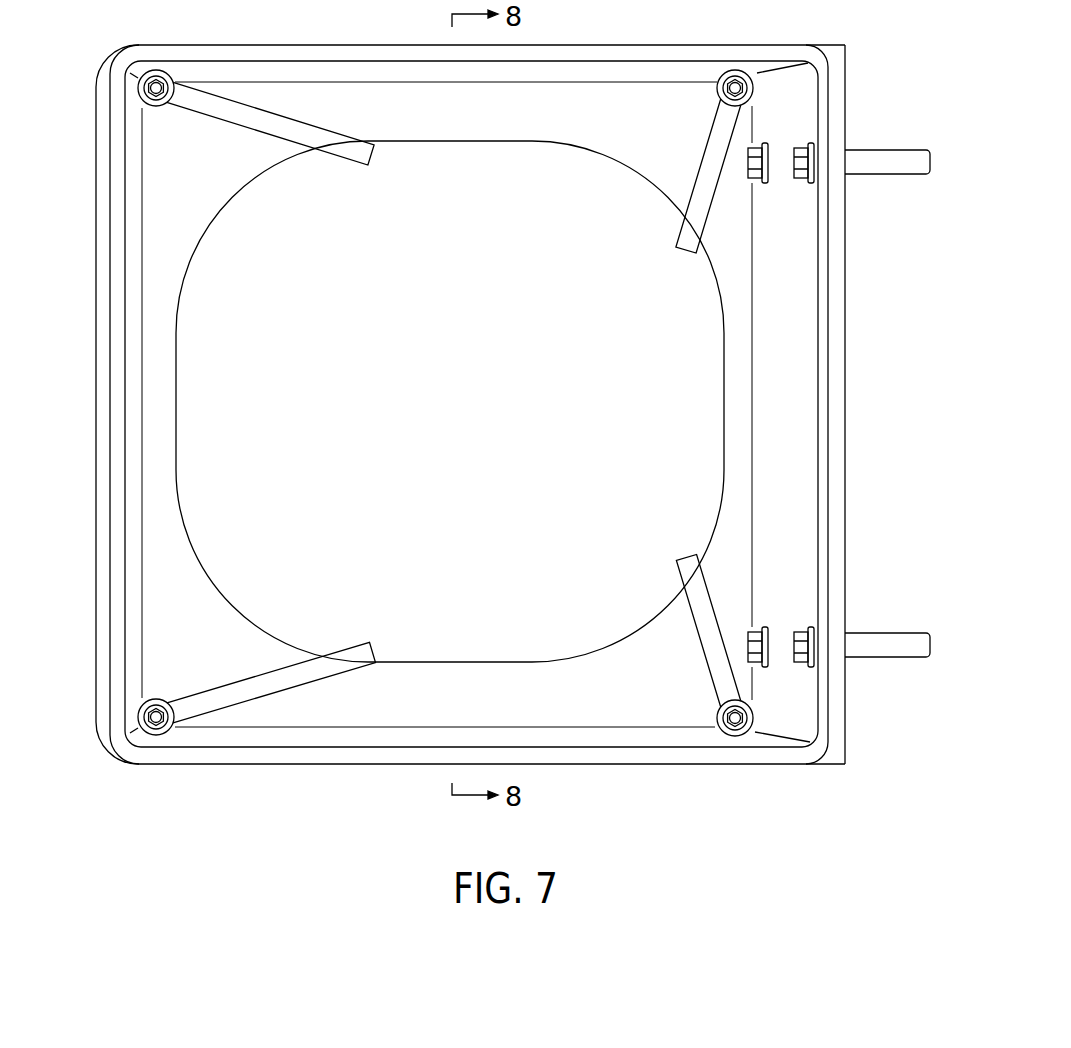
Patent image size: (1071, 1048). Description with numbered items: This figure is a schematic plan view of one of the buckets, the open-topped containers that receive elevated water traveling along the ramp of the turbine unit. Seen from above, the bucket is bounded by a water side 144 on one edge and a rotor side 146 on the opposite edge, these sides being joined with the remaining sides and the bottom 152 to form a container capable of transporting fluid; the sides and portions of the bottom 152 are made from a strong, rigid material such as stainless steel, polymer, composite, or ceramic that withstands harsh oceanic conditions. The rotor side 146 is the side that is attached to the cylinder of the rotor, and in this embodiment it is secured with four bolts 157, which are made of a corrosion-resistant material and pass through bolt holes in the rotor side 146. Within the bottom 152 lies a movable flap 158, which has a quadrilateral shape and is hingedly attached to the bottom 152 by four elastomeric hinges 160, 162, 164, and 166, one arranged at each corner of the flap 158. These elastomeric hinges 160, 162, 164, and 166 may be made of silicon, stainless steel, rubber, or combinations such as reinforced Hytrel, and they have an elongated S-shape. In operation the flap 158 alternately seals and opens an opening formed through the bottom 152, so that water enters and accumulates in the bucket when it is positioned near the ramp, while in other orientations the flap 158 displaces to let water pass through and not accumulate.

The water side 144 is at (115, 164).
The rotor side 146 is at (835, 383).
The bottom 152 is at (157, 436).
The bolts 157 is at (807, 627).
The movable flap 158 is at (450, 394).
The elastomeric hinge 160 is at (345, 150).
The elastomeric hinge 162 is at (348, 655).
The elastomeric hinge 164 is at (705, 627).
The elastomeric hinge 166 is at (687, 227).